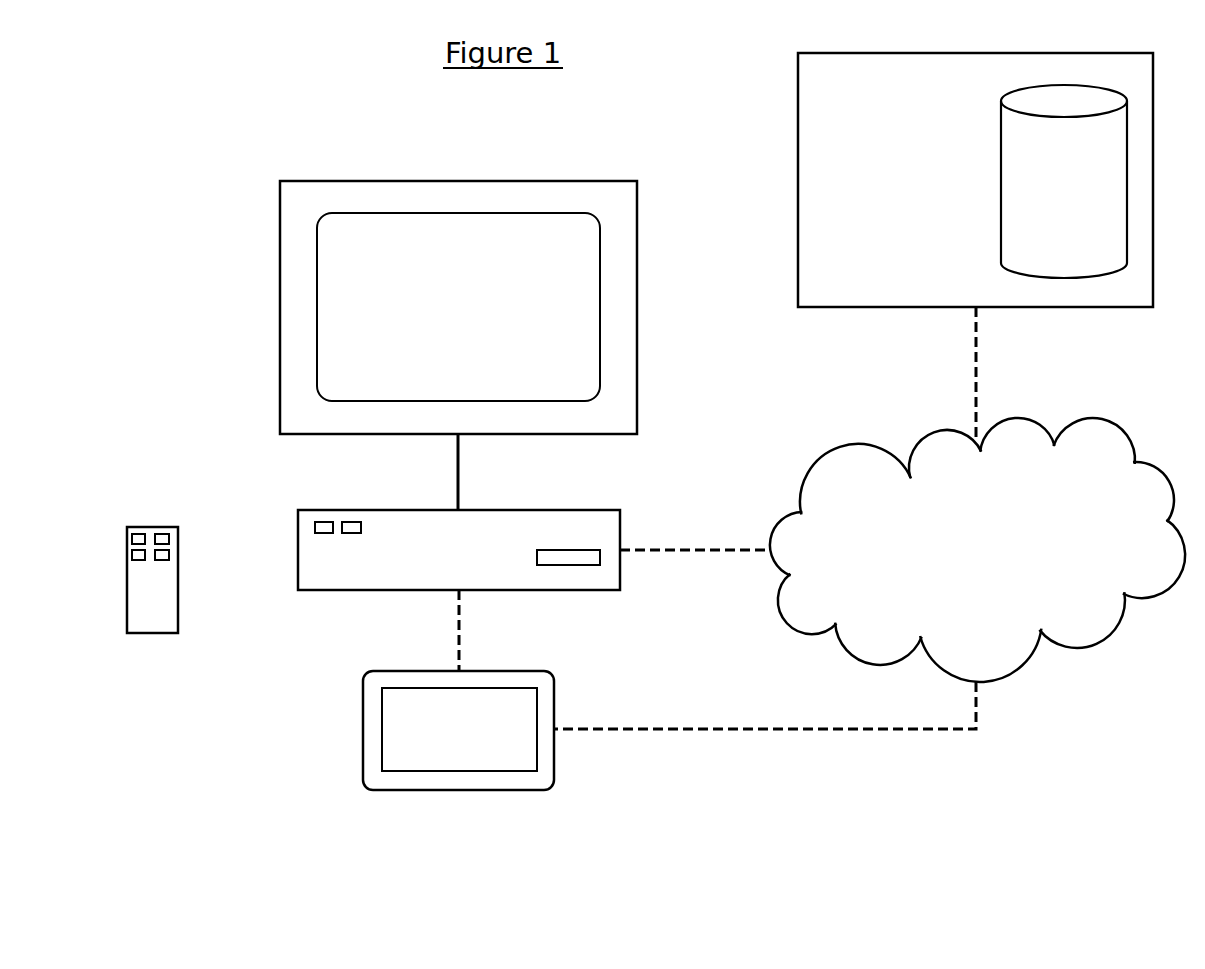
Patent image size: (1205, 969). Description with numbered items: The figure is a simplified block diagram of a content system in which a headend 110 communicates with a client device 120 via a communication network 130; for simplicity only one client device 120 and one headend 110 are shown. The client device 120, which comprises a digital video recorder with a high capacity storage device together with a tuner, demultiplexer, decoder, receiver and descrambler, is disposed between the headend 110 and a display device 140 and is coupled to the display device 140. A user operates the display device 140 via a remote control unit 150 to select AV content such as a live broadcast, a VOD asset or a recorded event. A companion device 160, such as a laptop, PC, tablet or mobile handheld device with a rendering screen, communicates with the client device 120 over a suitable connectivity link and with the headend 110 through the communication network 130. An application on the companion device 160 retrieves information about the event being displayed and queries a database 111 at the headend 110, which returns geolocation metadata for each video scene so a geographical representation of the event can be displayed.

The headend 110 is at (833, 57).
The database 111 is at (998, 178).
The client device 120 is at (322, 592).
The communication network 130 is at (845, 465).
The display device 140 is at (307, 183).
The remote control unit 150 is at (137, 525).
The companion device 160 is at (367, 783).